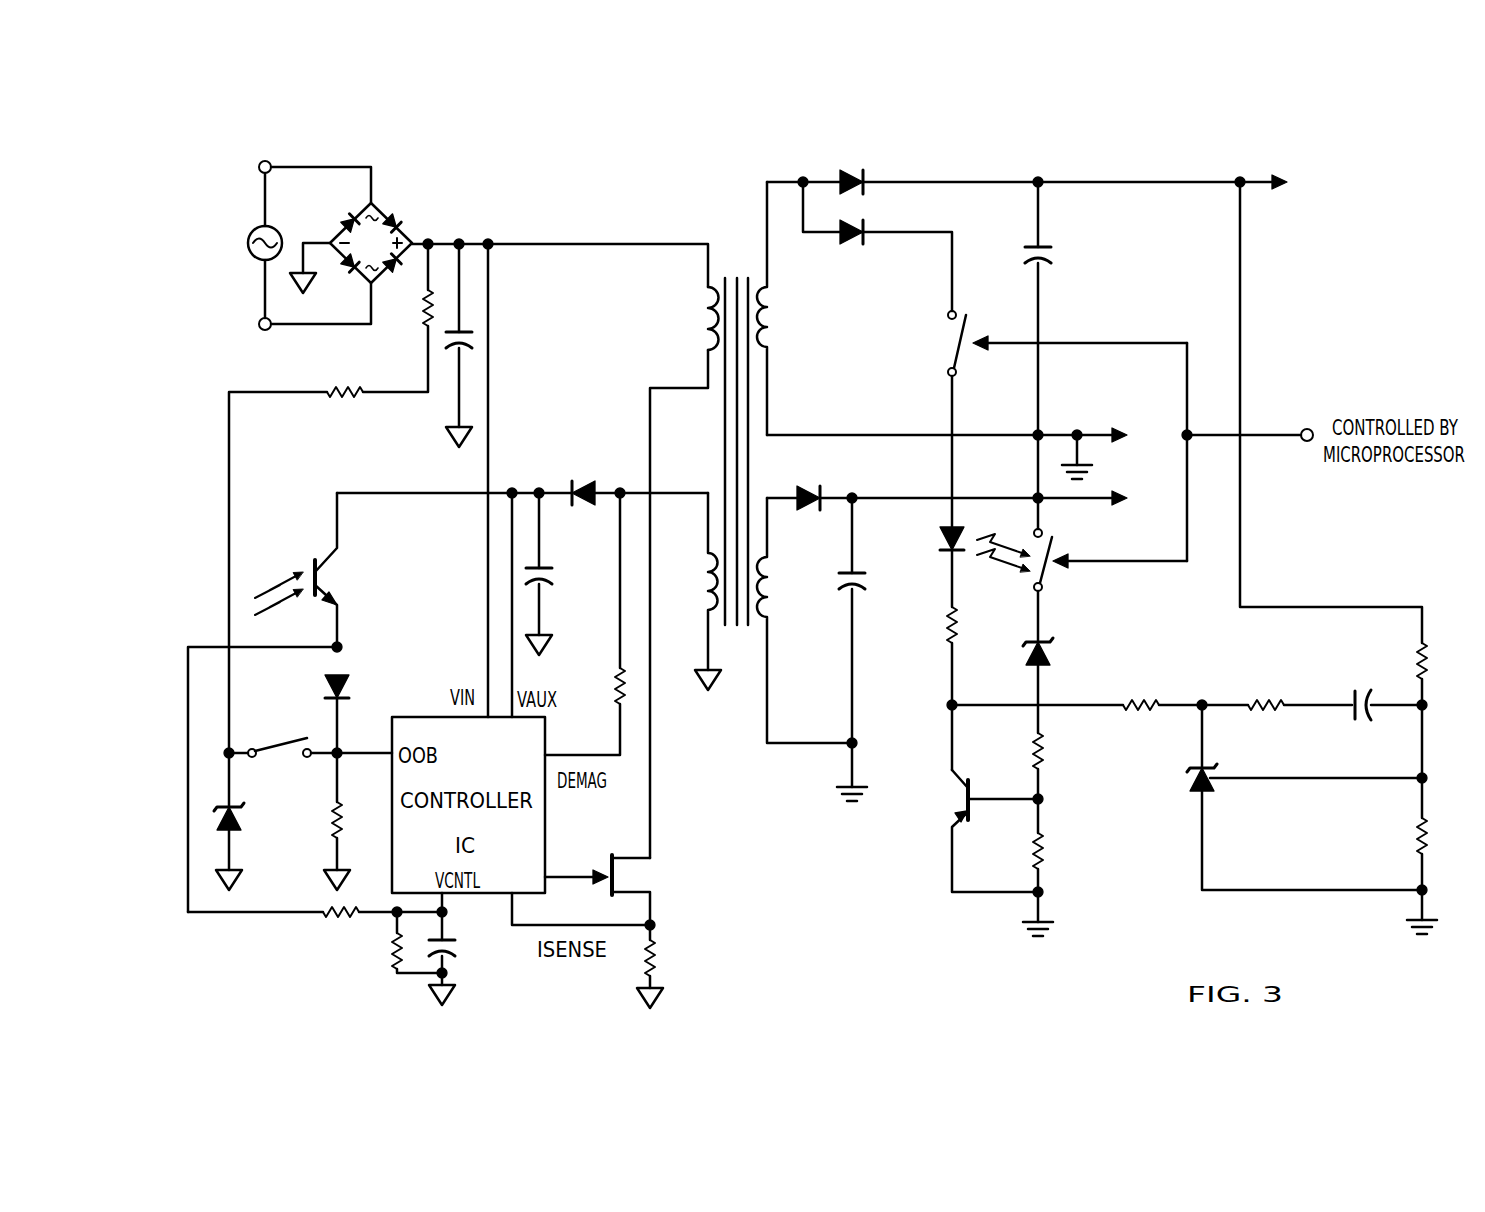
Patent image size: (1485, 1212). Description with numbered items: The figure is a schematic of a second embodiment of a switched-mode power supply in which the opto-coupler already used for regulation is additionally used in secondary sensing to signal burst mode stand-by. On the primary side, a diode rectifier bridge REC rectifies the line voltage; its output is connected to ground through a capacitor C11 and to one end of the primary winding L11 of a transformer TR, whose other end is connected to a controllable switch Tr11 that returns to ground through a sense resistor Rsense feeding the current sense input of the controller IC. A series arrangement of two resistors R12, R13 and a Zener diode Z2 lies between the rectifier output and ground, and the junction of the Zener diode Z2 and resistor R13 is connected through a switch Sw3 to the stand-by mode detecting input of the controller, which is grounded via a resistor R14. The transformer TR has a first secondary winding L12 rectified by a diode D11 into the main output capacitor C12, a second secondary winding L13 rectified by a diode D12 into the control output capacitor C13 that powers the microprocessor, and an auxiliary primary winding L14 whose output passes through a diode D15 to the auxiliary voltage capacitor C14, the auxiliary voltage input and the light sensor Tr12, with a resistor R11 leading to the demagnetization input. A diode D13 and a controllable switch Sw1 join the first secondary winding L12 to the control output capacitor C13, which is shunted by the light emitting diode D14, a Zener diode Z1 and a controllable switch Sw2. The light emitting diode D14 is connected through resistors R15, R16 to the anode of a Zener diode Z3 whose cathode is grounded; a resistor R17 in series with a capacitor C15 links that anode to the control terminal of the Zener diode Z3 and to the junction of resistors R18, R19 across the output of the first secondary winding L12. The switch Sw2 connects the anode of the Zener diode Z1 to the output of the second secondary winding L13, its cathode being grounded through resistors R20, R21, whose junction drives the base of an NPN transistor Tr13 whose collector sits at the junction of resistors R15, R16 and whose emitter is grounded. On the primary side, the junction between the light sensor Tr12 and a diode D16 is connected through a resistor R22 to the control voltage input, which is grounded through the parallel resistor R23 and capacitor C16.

The diode rectifier bridge REC is at (395, 226).
The resistor R12 is at (417, 313).
The resistor R13 is at (343, 382).
The capacitor C11 is at (447, 360).
The transformer TR is at (737, 255).
The primary winding L11 is at (703, 315).
The first secondary winding L12 is at (772, 305).
The second secondary winding L13 is at (772, 593).
The auxiliary primary winding L14 is at (702, 605).
The diode D11 is at (850, 192).
The diode D12 is at (803, 483).
The diode D13 is at (847, 242).
The light emitting diode of the opto-coupler D14 is at (933, 533).
The diode D15 is at (588, 480).
The diode D16 is at (323, 688).
The main output capacitor C12 is at (1018, 253).
The control output capacitor C13 is at (837, 583).
The Vaux capacitor C14 is at (558, 577).
The capacitor C15 is at (1365, 725).
The capacitor C16 is at (456, 945).
The controllable switch Sw1 is at (1047, 419).
The controllable switch Sw2 is at (1058, 548).
The switch Sw3 is at (310, 763).
The Zener diode Z1 is at (1050, 642).
The Zener diode Z2 is at (242, 818).
The Zener diode Z3 is at (1187, 777).
The resistor R11 is at (612, 685).
The resistor R14 is at (340, 818).
The resistor R15 is at (940, 627).
The resistor R16 is at (1137, 697).
The resistor R17 is at (1262, 697).
The resistor R18 is at (1412, 660).
The resistor R19 is at (1410, 845).
The resistor R20 is at (1047, 747).
The resistor R21 is at (1047, 848).
The resistor R22 is at (343, 920).
The resistor R23 is at (385, 945).
The controllable switch Tr11 is at (615, 877).
The light sensor of the opto-coupler Tr12 is at (313, 565).
The NPN transistor Tr13 is at (958, 797).
The sense resistor Rsense is at (687, 966).